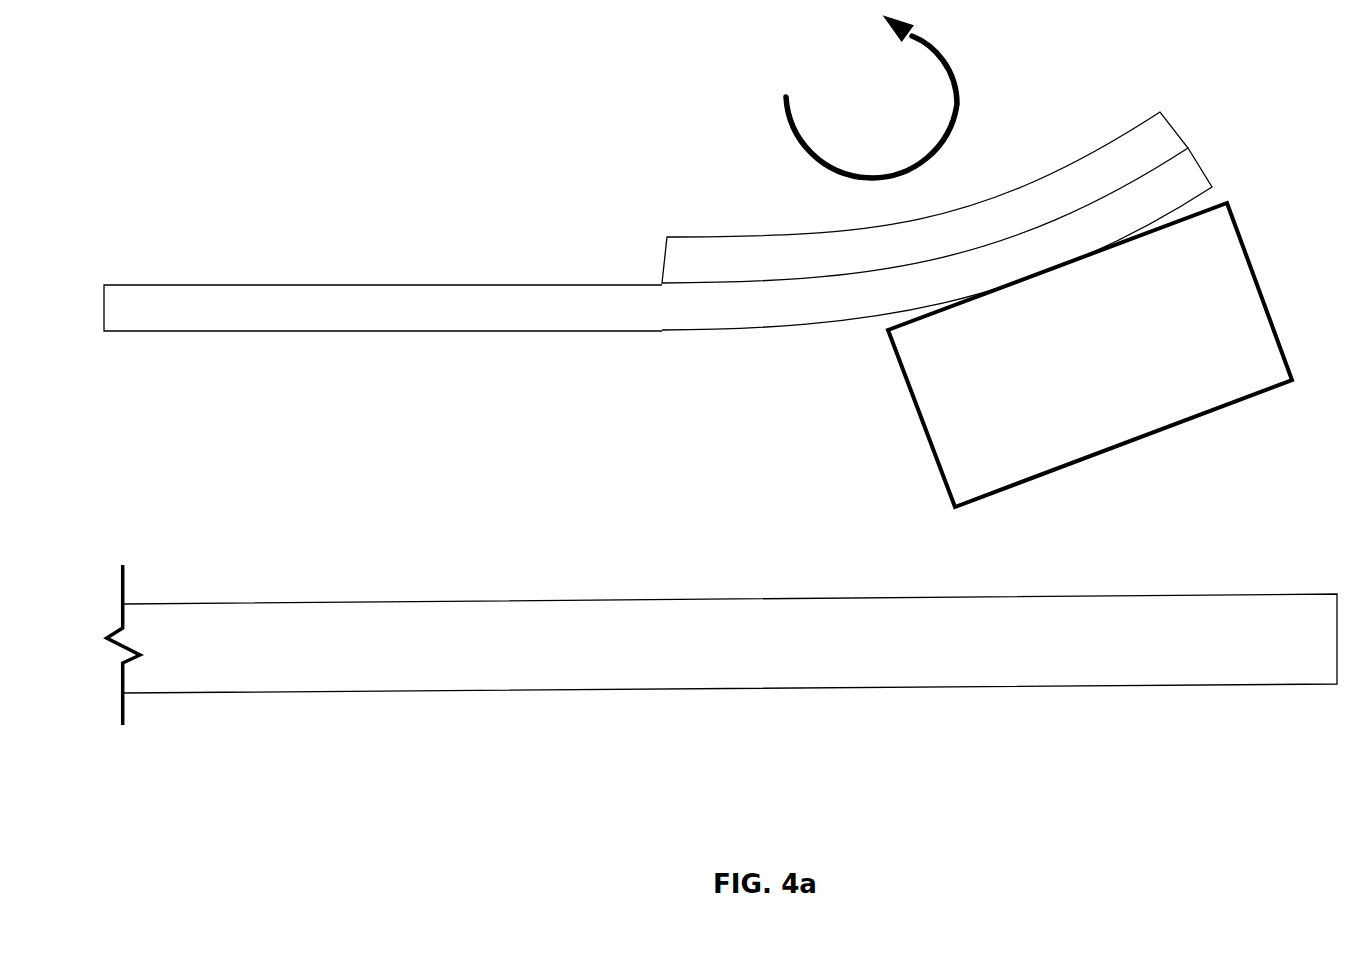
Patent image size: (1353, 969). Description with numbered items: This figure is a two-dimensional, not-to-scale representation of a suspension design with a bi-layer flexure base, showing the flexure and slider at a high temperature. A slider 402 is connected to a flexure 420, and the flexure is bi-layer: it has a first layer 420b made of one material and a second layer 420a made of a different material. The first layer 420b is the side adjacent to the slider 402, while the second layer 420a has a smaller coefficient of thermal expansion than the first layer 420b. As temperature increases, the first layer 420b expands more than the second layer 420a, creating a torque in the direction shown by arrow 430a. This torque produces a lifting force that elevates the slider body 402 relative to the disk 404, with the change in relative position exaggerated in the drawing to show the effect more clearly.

The slider 402 is at (1090, 355).
The disk 404 is at (722, 645).
The flexure 420 is at (383, 308).
The second layer 420a is at (1177, 127).
The first layer 420b is at (1203, 168).
The arrow 430a is at (871, 97).